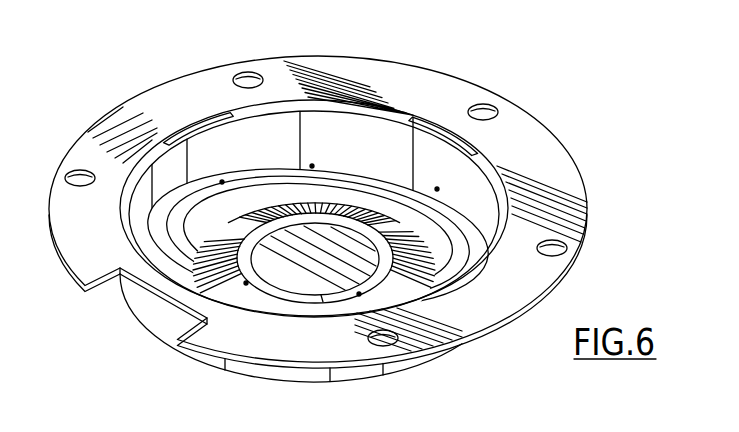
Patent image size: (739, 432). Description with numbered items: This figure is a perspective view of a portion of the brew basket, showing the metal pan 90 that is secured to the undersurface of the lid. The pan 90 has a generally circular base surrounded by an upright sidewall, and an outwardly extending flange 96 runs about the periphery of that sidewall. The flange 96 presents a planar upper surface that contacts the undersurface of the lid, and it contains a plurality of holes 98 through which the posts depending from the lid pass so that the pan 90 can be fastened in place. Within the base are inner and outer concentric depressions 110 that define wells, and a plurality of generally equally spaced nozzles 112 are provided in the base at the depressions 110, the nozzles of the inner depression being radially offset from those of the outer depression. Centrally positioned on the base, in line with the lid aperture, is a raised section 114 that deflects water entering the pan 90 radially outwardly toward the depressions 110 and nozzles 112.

The metal pan 90 is at (356, 202).
The outwardly extending flange 96 is at (560, 188).
The holes 98 is at (250, 71).
The concentric depressions 110 is at (470, 227).
The nozzles 112 is at (222, 181).
The raised section 114 is at (300, 279).